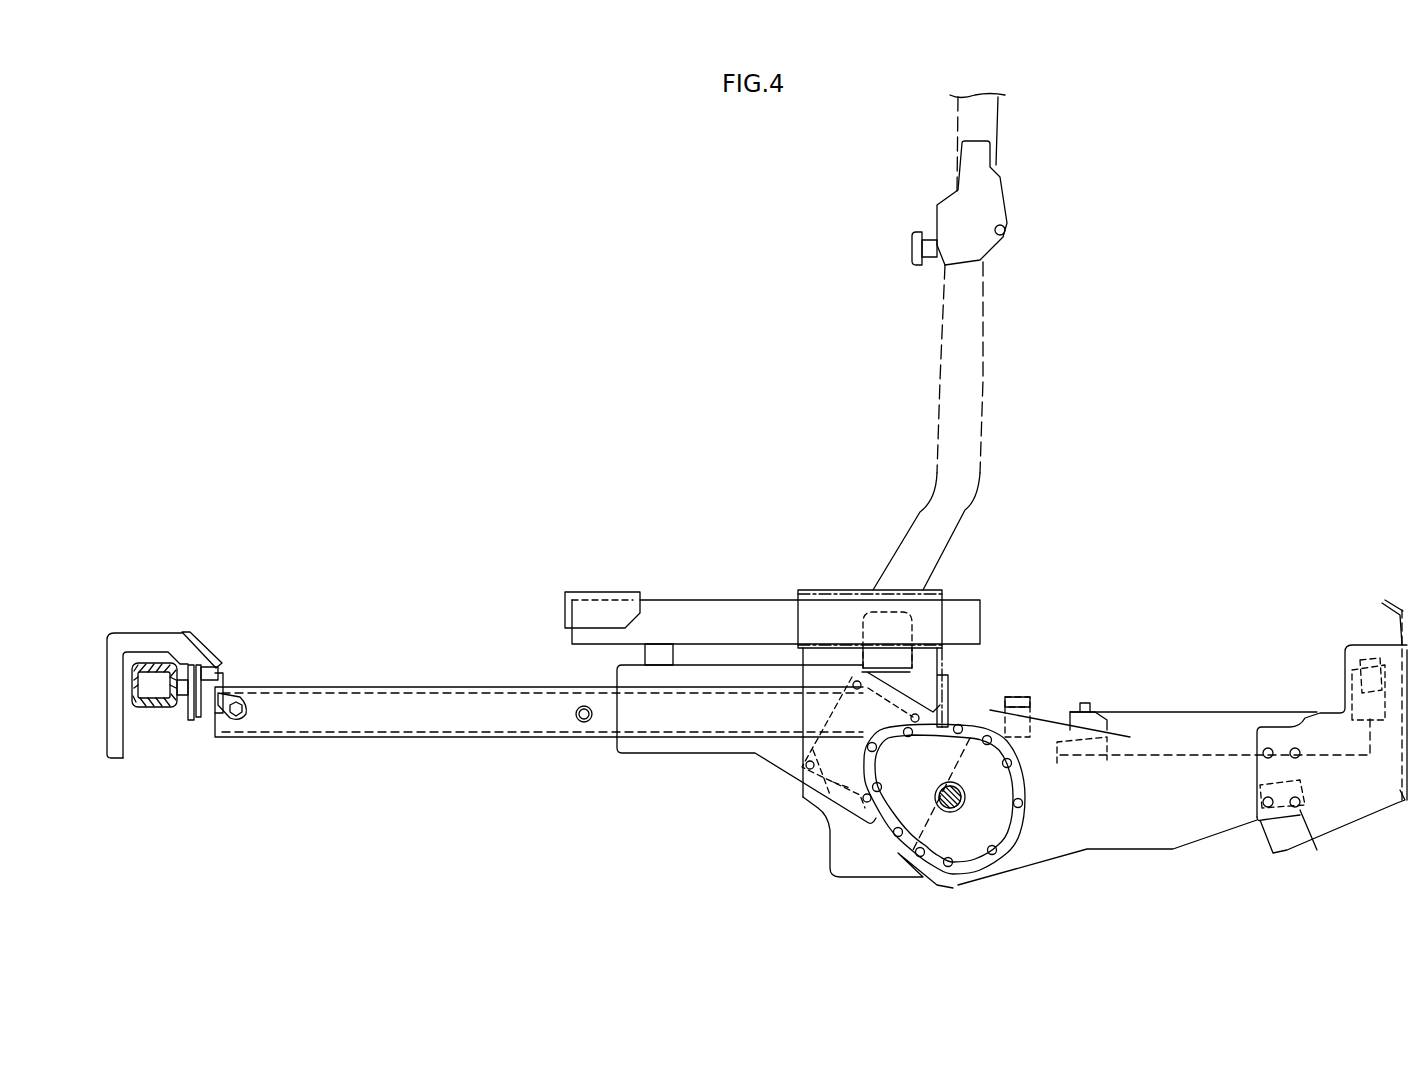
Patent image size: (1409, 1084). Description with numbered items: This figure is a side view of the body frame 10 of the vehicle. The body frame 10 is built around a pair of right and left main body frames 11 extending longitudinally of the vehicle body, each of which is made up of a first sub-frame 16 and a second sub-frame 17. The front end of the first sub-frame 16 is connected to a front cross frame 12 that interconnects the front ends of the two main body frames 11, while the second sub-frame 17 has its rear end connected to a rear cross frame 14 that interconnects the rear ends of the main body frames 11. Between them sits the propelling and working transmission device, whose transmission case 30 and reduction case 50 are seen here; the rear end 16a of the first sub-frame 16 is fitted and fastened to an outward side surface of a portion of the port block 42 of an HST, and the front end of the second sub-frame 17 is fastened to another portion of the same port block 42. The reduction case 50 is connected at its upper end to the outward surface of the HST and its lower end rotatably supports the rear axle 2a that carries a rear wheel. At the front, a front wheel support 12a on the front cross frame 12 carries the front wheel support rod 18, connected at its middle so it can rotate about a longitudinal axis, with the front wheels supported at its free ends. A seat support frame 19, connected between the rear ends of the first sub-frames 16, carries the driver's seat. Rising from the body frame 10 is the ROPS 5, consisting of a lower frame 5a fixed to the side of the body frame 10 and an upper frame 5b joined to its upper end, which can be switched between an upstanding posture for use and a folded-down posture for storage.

The rear axle 2a is at (948, 812).
The ROPS 5 is at (1001, 342).
The lower frame 5a is at (1018, 300).
The upper frame 5b is at (993, 121).
The body frame 10 is at (528, 680).
The main body frame 11 is at (792, 757).
The front cross frame 12 is at (217, 667).
The front wheel support 12a is at (148, 633).
The rear cross frame 14 is at (1283, 727).
The first sub-frame 16 is at (406, 687).
The rear end of first sub-frame 16a is at (657, 755).
The second sub-frame 17 is at (1147, 823).
The front wheel support rod 18 is at (152, 707).
The seat support frame 19 is at (720, 598).
The transmission case 30 is at (873, 857).
The port block 42 is at (818, 813).
The reduction case 50 is at (1015, 778).